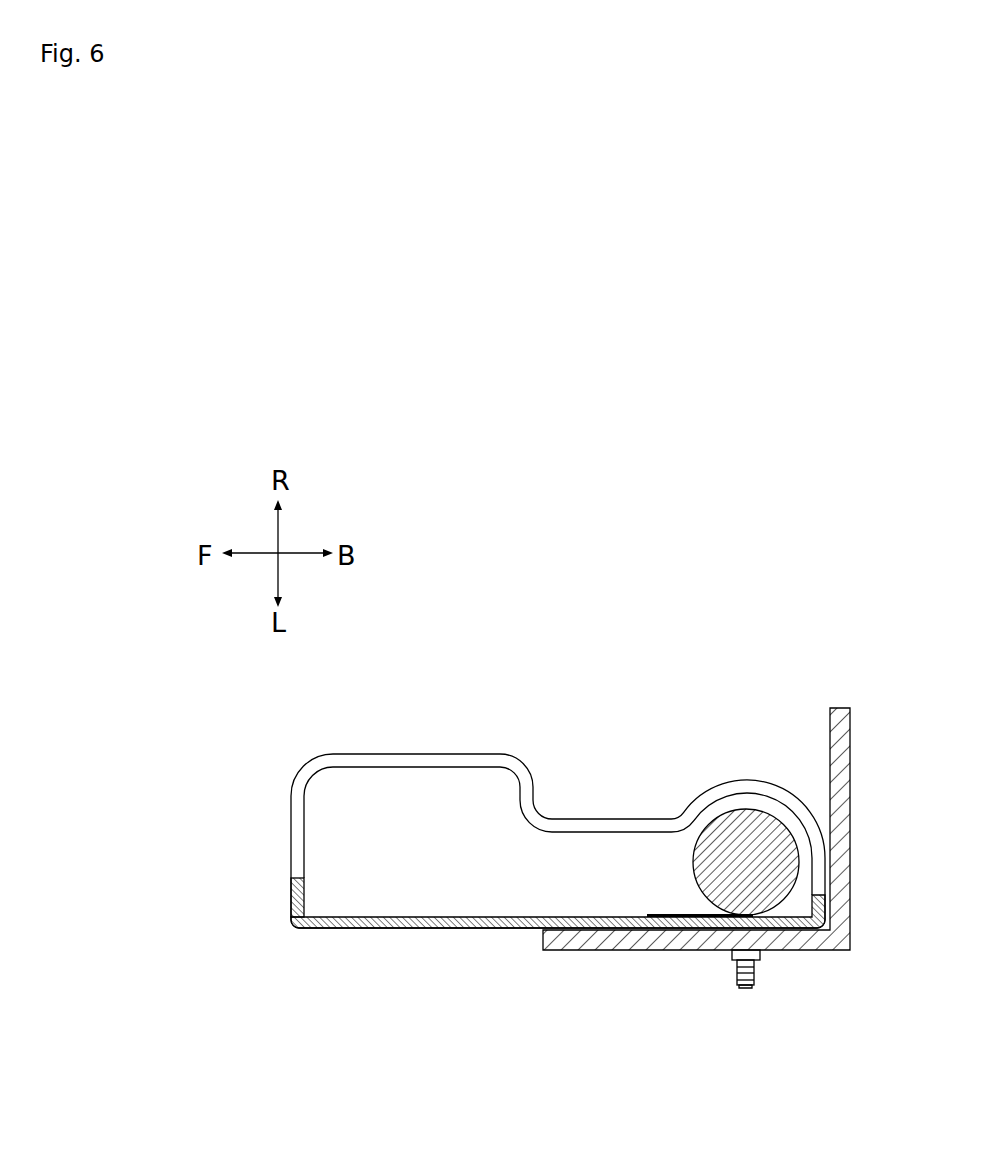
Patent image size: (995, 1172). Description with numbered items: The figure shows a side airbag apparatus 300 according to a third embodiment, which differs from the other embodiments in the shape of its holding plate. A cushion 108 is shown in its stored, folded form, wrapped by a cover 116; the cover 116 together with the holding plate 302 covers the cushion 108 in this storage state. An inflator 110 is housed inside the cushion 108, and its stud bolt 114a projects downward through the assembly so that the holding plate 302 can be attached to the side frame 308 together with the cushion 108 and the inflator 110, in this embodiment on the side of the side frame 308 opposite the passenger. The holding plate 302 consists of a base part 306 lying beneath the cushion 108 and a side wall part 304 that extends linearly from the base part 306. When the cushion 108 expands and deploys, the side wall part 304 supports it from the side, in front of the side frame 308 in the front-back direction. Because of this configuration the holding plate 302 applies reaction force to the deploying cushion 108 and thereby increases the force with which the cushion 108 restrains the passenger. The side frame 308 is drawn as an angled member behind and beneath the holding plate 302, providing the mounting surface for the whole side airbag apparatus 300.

The side airbag apparatus 300 is at (790, 660).
The cover 116 is at (300, 768).
The cushion 108 is at (607, 832).
The inflator 110 is at (745, 808).
The holding plate 302 is at (297, 930).
The side wall part 304 is at (420, 930).
The base part 306 is at (637, 916).
The side frame 308 is at (822, 951).
The stud bolt 114a is at (742, 990).